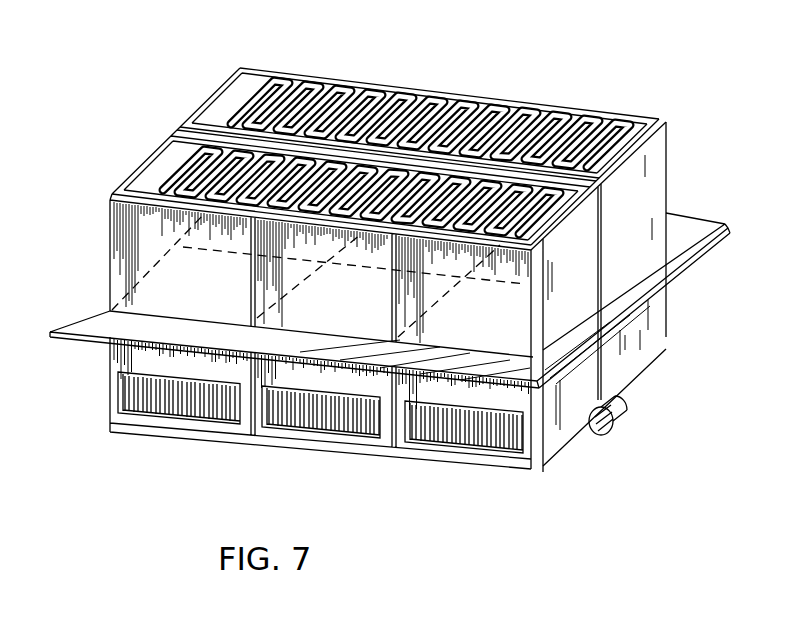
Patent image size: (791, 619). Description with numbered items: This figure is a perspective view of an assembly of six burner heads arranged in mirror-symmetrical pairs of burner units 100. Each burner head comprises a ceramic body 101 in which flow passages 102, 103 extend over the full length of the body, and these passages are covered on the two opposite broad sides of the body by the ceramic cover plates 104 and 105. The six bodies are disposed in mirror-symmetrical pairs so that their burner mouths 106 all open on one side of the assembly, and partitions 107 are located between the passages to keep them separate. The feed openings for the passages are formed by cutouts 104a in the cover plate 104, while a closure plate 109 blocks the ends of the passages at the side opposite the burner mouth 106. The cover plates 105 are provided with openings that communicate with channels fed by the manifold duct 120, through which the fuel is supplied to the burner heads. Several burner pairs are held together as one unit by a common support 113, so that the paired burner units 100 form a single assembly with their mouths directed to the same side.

The burner unit 100 is at (633, 235).
The ceramic body 101 is at (148, 172).
The flow passage 102 is at (426, 96).
The flow passage 103 is at (608, 176).
The ceramic cover plate 104 is at (133, 196).
The cutout 104a is at (459, 441).
The ceramic cover plate 105 is at (200, 137).
The burner mouth 106 is at (654, 122).
The partition 107 is at (578, 116).
The closure plate 109 is at (525, 463).
The common support 113 is at (83, 308).
The manifold duct 120 is at (617, 420).